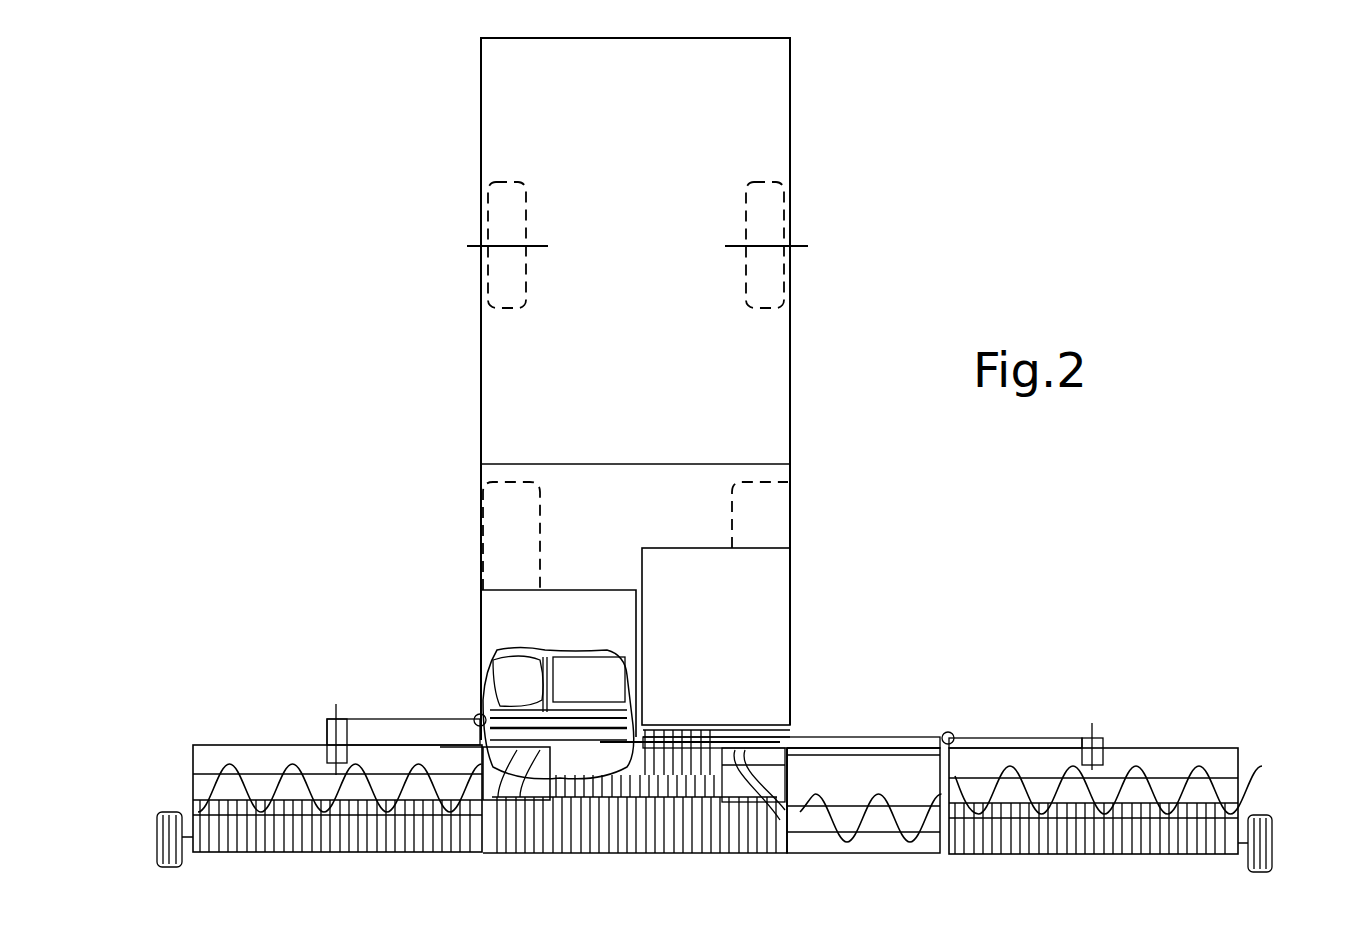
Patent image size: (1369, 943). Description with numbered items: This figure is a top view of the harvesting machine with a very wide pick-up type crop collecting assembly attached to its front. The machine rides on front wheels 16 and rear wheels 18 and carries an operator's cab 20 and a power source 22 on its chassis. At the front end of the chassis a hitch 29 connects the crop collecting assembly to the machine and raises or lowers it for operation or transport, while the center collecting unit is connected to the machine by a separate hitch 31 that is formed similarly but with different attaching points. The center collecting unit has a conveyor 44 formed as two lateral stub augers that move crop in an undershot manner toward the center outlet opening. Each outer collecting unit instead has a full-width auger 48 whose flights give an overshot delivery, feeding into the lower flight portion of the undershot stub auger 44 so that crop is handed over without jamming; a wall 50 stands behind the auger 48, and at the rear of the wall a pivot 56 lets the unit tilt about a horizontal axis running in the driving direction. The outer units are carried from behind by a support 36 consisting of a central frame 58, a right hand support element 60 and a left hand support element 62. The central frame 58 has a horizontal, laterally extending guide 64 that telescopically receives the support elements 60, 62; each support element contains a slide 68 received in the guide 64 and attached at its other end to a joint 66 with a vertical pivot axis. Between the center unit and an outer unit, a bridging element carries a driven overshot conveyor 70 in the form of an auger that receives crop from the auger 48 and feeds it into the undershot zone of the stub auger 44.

The front wheels 16 is at (770, 497).
The rear wheels 18 is at (765, 208).
The operator's cab 20 is at (603, 641).
The power source 22 is at (701, 641).
The hitch 29 is at (545, 674).
The hitch 31 is at (553, 672).
The support 36 is at (858, 706).
The conveyor (stub augers) 44 is at (742, 790).
The conveyor (auger) 48 is at (1258, 780).
The wall 50 is at (1190, 748).
The pivot 56 is at (313, 718).
The central frame 58 is at (504, 694).
The right hand support element 60 is at (389, 706).
The left hand support element 62 is at (908, 723).
The guide 64 is at (672, 750).
The joint 66 is at (476, 715).
The slide 68 is at (812, 735).
The conveyor (auger) 70 is at (886, 843).